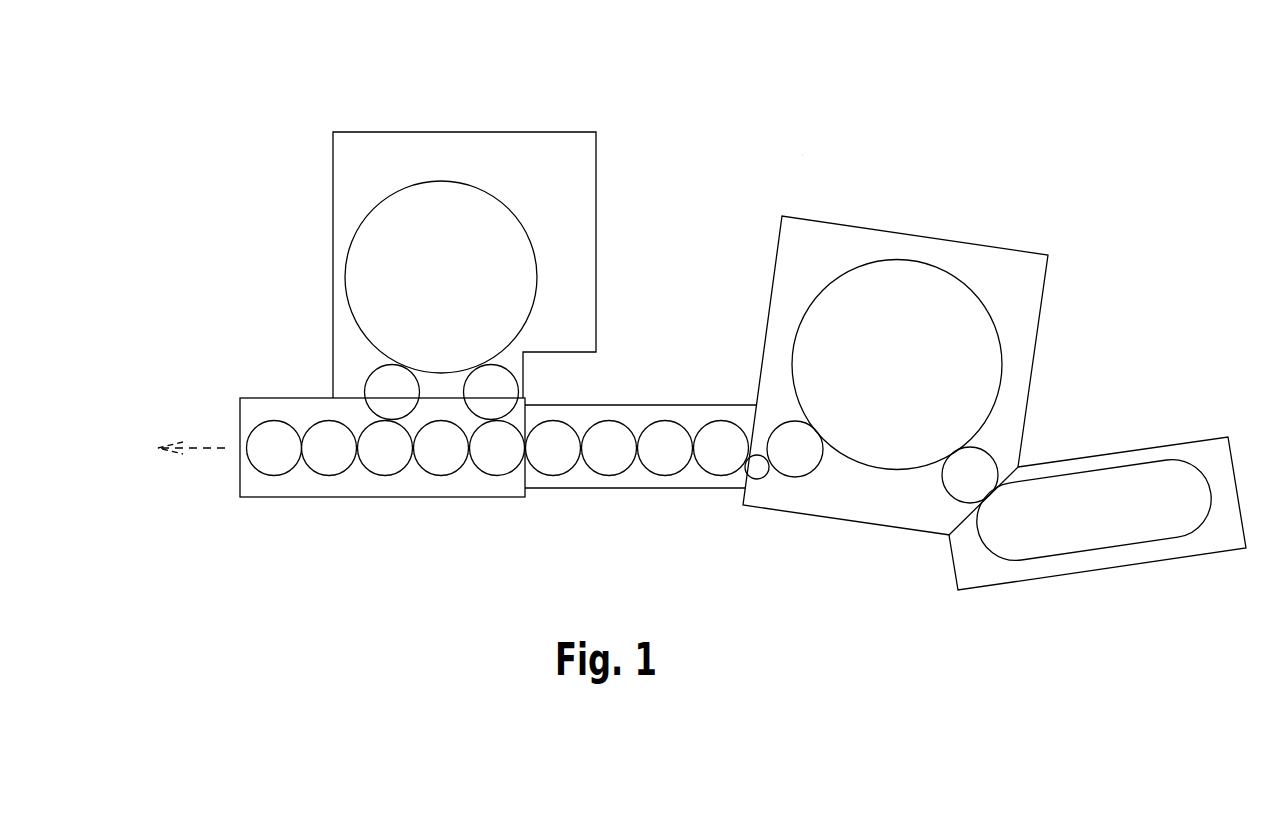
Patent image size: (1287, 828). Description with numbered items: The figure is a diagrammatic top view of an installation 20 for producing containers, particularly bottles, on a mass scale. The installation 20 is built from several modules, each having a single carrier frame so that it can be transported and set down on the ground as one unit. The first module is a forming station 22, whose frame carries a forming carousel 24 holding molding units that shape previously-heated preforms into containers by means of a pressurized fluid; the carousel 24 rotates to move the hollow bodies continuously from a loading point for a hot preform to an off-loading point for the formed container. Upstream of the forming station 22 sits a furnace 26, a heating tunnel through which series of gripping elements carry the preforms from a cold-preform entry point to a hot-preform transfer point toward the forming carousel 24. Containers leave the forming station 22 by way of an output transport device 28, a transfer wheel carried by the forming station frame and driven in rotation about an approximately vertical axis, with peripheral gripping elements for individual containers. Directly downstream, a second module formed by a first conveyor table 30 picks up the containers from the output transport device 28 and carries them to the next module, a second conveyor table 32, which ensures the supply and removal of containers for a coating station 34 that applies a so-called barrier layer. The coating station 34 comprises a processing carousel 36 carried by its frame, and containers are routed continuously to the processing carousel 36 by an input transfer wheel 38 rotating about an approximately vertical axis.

The installation 20 is at (802, 155).
The forming station 22 is at (995, 242).
The forming carousel 24 is at (945, 352).
The furnace 26 is at (1138, 572).
The output transport device 28 is at (757, 468).
The first conveyor table 30 is at (633, 492).
The second conveyor table 32 is at (407, 500).
The coating station 34 is at (523, 130).
The processing carousel 36 is at (398, 257).
The input transfer wheel 38 is at (500, 383).